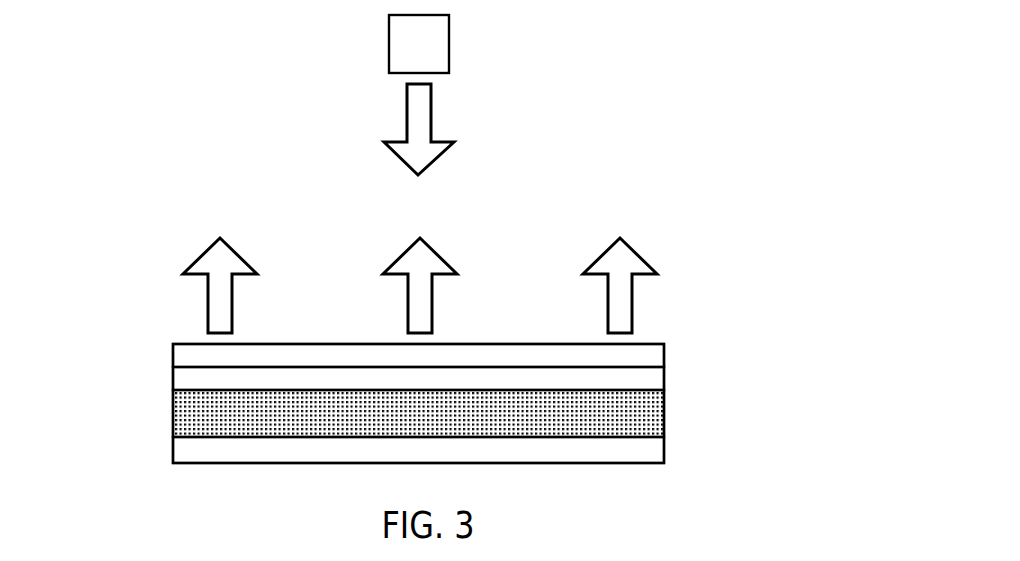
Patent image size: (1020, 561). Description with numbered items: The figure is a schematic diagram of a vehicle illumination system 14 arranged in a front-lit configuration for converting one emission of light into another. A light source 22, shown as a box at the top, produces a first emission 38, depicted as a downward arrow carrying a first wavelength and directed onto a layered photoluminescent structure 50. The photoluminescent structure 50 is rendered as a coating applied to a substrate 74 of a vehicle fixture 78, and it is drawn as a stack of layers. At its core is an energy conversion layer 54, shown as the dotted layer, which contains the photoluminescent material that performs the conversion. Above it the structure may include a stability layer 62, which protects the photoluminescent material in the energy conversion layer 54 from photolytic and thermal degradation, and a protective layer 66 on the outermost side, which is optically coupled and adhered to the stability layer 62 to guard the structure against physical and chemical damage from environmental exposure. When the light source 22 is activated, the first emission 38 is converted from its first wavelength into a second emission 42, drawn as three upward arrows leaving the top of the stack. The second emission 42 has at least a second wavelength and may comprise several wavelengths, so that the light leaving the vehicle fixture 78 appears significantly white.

The illumination system 14 is at (740, 106).
The light source 22 is at (419, 44).
The first emission 38 is at (410, 108).
The second emission 42 is at (247, 259).
The photoluminescent structure 50 is at (95, 399).
The energy conversion layer 54 is at (182, 415).
The stability layer 62 is at (657, 377).
The protective layer 66 is at (656, 357).
The substrate 74 is at (657, 447).
The vehicle fixture 78 is at (130, 318).